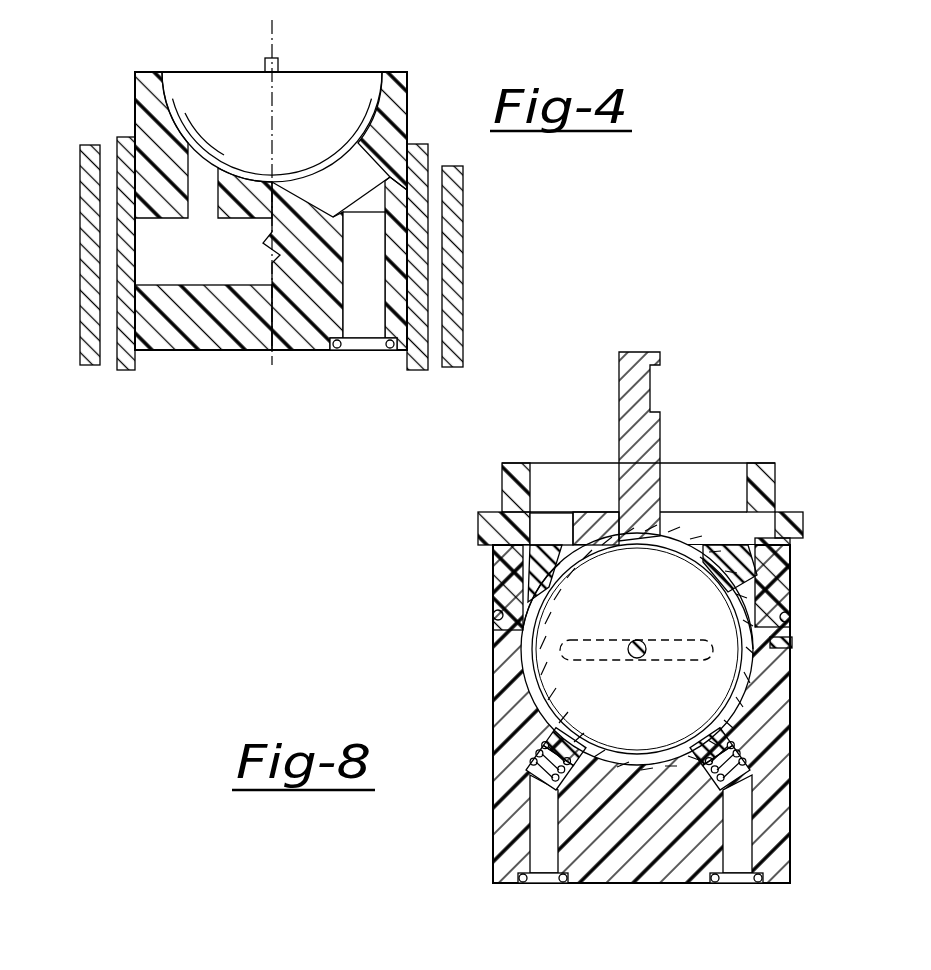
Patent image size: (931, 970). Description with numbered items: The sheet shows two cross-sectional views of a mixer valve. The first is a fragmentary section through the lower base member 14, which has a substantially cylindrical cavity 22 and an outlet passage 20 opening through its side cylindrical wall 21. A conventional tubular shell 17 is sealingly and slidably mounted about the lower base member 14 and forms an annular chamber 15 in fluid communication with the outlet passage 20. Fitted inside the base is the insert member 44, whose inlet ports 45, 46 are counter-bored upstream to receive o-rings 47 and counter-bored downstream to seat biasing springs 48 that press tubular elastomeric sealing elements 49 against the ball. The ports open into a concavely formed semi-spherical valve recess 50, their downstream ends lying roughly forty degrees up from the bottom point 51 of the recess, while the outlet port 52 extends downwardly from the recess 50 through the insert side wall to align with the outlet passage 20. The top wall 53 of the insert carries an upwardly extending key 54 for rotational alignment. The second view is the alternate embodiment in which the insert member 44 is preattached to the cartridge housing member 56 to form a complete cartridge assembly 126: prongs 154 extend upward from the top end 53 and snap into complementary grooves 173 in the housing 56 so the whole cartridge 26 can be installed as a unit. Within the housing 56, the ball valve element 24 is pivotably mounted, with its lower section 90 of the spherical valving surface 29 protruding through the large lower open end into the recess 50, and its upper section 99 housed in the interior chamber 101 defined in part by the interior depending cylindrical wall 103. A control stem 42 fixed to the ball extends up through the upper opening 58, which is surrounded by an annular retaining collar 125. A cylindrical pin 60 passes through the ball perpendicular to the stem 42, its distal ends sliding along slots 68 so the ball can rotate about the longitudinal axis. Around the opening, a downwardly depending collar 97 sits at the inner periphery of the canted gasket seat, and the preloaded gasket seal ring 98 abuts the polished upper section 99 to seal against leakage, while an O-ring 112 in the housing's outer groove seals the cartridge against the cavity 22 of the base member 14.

In FIG. 4, the lower base member 14 is at (116, 137).
In FIG. 4, the annular chamber 15 is at (440, 165).
In FIG. 4, the tubular shell 17 is at (80, 190).
In FIG. 4, the outlet passage 20 is at (135, 275).
In FIG. 4, the side cylindrical wall 21 is at (397, 322).
In FIG. 4, the cylindrical cavity 22 is at (405, 256).
In FIG. 8, the ball valve element 24 is at (515, 678).
In FIG. 8, the cartridge 26 is at (478, 490).
In FIG. 8, the spherical valving surface 29 is at (543, 828).
In FIG. 8, the control stem 42 is at (642, 352).
In FIG. 8, the insert member 44 is at (792, 745).
In FIG. 8, the inlet port 45 is at (735, 835).
In FIG. 4, the inlet port 46 is at (340, 185).
In FIG. 8, the inlet port 46 is at (530, 860).
In FIG. 4, the o-ring 47 is at (337, 350).
In FIG. 8, the o-ring 47 is at (522, 883).
In FIG. 8, the biasing spring 48 is at (545, 790).
In FIG. 8, the tubular elastomeric sealing element 49 is at (533, 770).
In FIG. 4, the semi-spherical valve recess 50 is at (360, 98).
In FIG. 4, the bottom point 51 is at (272, 185).
In FIG. 4, the outlet port 52 is at (200, 245).
In FIG. 4, the top wall 53 is at (145, 72).
In FIG. 8, the top wall 53 is at (540, 640).
In FIG. 4, the key 54 is at (272, 58).
In FIG. 8, the cartridge housing member 56 is at (775, 575).
In FIG. 8, the upper opening 58 is at (592, 520).
In FIG. 8, the cylindrical pin 60 is at (645, 645).
In FIG. 8, the slot 68 is at (665, 660).
In FIG. 8, the lower section 90 is at (520, 718).
In FIG. 8, the collar 97 is at (722, 545).
In FIG. 8, the gasket seal ring 98 is at (498, 535).
In FIG. 8, the upper section 99 is at (700, 560).
In FIG. 8, the interior chamber 101 is at (527, 568).
In FIG. 8, the interior depending cylindrical wall 103 is at (558, 592).
In FIG. 8, the O-ring 112 is at (493, 614).
In FIG. 8, the annular retaining collar 125 is at (770, 490).
In FIG. 8, the cartridge assembly 126 is at (455, 655).
In FIG. 8, the prong 154 is at (795, 647).
In FIG. 8, the groove 173 is at (790, 620).